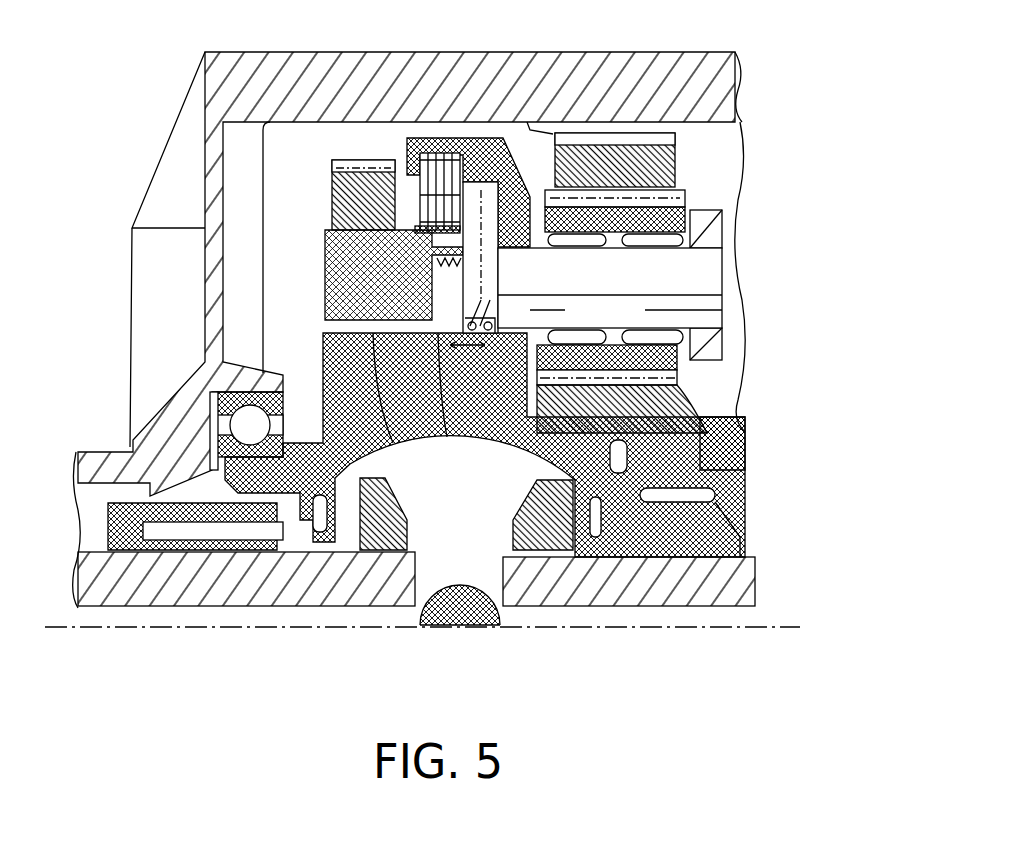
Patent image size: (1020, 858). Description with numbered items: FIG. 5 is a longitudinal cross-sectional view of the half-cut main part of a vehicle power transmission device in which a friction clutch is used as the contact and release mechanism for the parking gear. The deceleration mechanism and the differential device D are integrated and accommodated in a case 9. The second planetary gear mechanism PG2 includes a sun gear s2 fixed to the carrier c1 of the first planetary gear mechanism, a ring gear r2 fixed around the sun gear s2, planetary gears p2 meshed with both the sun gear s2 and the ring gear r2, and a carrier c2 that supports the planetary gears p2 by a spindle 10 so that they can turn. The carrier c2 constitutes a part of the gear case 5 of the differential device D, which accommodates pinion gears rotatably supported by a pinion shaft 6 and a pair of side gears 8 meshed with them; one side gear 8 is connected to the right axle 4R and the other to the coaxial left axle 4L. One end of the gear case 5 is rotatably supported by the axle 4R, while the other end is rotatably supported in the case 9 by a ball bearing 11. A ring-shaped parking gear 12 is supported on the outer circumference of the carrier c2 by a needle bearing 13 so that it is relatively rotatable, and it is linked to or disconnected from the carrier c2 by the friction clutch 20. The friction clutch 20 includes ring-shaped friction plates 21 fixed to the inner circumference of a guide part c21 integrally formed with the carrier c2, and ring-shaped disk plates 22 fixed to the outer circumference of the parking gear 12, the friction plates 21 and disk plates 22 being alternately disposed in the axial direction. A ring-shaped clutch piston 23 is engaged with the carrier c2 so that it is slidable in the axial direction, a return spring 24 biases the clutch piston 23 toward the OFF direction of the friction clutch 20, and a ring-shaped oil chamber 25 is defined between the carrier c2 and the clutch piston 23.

The case 9 is at (716, 52).
The friction plates 21 is at (440, 190).
The guide part c21 is at (477, 150).
The friction clutch 20 is at (392, 148).
The parking gear 12 is at (378, 202).
The disk plates 22 is at (378, 245).
The differential device D is at (303, 345).
The bearing 11 is at (248, 425).
The gear case 5 is at (305, 440).
The oil chamber 25 is at (498, 258).
The clutch piston 23 is at (495, 292).
The spindle 10 is at (707, 284).
The ring gear r2 is at (662, 170).
The second planetary gear mechanism PG2 is at (675, 277).
The planetary gears p2 is at (722, 215).
The sun gear s2 is at (695, 425).
The carrier c1 is at (745, 440).
The carrier c2 is at (497, 430).
The bearing 13 is at (392, 404).
The return spring 24 is at (448, 404).
The side gears 8 is at (395, 514).
The pinion shaft 6 is at (460, 586).
The axle 4L is at (213, 606).
The axle 4R is at (690, 606).